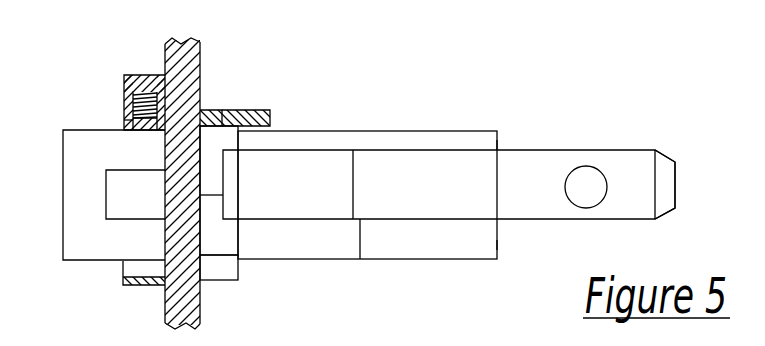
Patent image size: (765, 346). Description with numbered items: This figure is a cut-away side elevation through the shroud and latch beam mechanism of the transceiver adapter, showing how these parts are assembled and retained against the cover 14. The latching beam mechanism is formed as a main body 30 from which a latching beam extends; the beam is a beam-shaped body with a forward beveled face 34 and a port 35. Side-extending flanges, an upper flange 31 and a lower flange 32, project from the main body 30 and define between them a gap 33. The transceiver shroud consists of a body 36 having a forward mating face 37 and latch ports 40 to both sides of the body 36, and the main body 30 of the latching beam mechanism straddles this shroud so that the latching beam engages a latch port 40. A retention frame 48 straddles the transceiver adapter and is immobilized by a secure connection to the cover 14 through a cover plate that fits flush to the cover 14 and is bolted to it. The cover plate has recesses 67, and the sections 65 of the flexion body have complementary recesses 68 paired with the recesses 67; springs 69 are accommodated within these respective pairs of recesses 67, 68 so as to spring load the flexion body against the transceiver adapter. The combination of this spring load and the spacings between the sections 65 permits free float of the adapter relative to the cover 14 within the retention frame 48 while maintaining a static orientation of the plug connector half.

The cover 14 is at (165, 43).
The springs 69 is at (147, 92).
The recesses 67 is at (132, 96).
The complementary recesses 68 is at (153, 112).
The sections 65 is at (123, 120).
The latch ports 40 is at (125, 198).
The upper flange 31 is at (218, 110).
The retention frame 48 is at (252, 110).
The main body 30 is at (228, 137).
The lower flange 32 is at (205, 283).
The body 36 is at (455, 260).
The forward mating face 37 is at (497, 145).
The gap 33 is at (215, 230).
The forward beveled face 34 is at (663, 150).
The port 35 is at (586, 188).